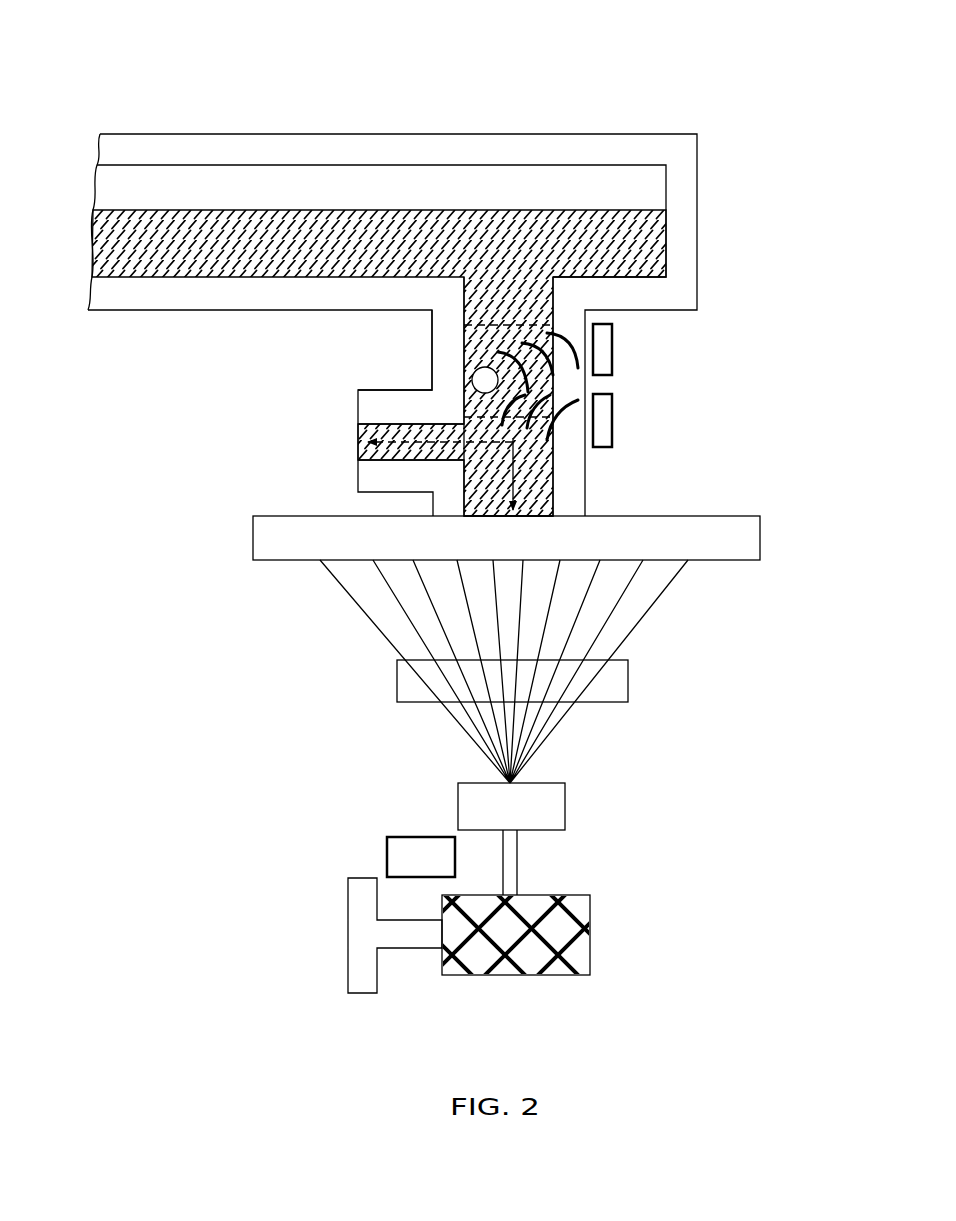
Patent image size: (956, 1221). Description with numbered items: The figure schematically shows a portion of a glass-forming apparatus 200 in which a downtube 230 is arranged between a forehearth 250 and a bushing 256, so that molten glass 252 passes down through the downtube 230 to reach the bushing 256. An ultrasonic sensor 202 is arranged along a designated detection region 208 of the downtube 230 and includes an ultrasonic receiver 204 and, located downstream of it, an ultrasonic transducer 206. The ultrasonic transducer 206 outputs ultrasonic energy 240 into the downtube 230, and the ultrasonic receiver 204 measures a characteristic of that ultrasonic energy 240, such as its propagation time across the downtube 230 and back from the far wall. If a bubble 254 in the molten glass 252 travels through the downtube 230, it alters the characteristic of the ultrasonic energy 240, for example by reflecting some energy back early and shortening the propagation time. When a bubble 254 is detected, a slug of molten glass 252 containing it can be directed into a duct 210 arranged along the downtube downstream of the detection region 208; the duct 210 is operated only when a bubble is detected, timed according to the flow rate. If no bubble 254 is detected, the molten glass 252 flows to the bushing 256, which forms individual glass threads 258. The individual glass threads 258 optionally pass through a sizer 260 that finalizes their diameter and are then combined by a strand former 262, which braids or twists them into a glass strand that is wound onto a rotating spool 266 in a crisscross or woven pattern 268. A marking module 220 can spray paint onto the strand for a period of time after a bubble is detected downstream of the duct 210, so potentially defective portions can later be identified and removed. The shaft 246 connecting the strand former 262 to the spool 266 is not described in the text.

The apparatus 200 is at (367, 95).
The ultrasonic sensor 202 is at (665, 347).
The ultrasonic receiver 204 is at (612, 352).
The ultrasonic transducer 206 is at (612, 408).
The detection region 208 is at (517, 325).
The duct 210 is at (398, 440).
The marking module 220 is at (407, 852).
The downtube 230 is at (447, 332).
The ultrasonic energy 240 is at (557, 405).
The shaft 246 is at (518, 857).
The forehearth 250 is at (633, 188).
The molten glass 252 is at (440, 243).
The bubble 254 is at (483, 378).
The bushing 256 is at (762, 527).
The individual glass threads 258 is at (623, 597).
The sizer 260 is at (620, 680).
The strand former 262 is at (553, 808).
The spool 266 is at (531, 931).
The crisscross or woven pattern 268 is at (548, 958).